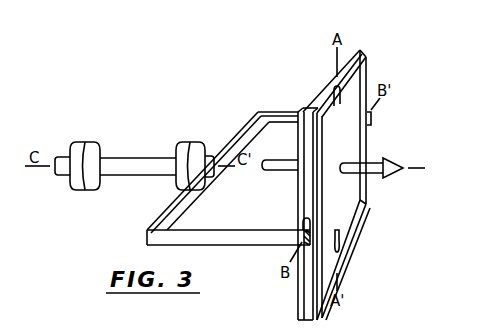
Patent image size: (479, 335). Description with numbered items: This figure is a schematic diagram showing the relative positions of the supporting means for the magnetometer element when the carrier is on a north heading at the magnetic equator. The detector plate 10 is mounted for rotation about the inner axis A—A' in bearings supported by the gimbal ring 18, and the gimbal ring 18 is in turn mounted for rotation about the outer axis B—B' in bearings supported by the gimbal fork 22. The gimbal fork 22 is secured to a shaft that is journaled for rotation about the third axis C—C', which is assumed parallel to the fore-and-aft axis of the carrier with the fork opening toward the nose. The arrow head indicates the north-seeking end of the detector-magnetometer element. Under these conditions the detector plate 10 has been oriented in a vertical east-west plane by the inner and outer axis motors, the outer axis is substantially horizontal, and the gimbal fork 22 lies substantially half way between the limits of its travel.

The detector plate 10 is at (350, 146).
The gimbal ring 18 is at (357, 48).
The gimbal fork 22 is at (250, 128).